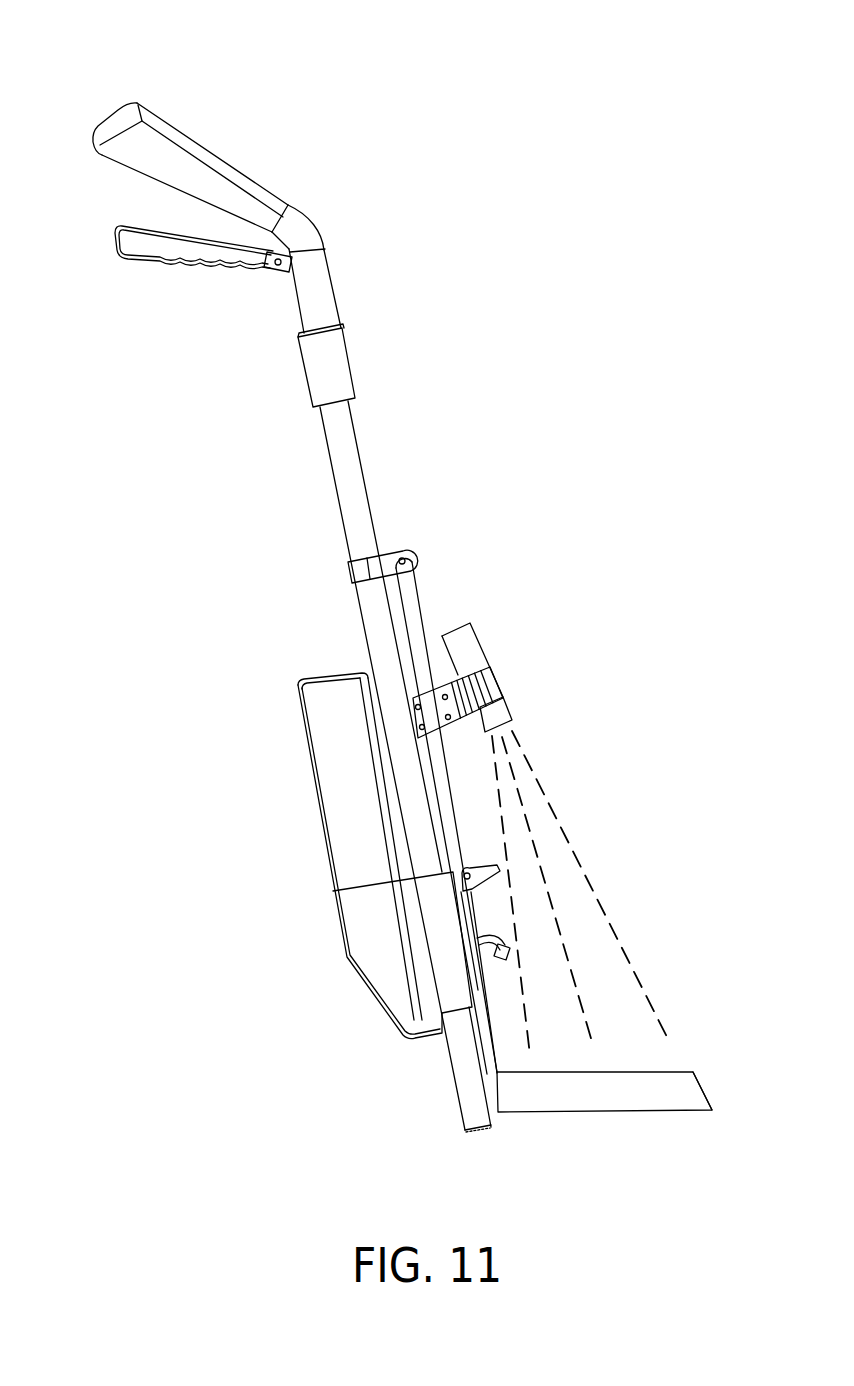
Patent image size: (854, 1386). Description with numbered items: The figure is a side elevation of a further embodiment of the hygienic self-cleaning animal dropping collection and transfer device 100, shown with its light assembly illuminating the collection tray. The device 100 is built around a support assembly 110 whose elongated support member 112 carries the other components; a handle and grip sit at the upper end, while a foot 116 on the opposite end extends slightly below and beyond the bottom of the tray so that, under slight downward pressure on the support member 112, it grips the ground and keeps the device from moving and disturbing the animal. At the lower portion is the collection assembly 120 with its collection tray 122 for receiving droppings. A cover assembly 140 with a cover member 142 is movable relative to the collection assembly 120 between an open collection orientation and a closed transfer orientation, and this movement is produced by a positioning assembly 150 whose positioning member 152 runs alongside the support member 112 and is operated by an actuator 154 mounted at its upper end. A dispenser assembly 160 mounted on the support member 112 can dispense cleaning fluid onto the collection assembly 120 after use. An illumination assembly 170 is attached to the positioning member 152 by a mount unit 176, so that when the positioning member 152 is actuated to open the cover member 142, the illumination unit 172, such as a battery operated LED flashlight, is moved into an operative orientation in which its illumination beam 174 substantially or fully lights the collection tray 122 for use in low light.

The hygienic self-cleaning animal dropping collection and transfer device 100 is at (622, 88).
The support assembly 110 is at (368, 290).
The support member 112 is at (360, 620).
The foot 116 is at (484, 1132).
The collection assembly 120 is at (640, 1127).
The collection tray 122 is at (686, 1098).
The cover assembly 140 is at (491, 856).
The cover member 142 is at (490, 994).
The positioning assembly 150 is at (494, 753).
The positioning member 152 is at (425, 618).
The actuator 154 is at (403, 553).
The dispenser assembly 160 is at (331, 933).
The illumination assembly 170 is at (562, 785).
The illumination unit 172 is at (514, 712).
The illumination beam 174 is at (618, 941).
The mount unit 176 is at (502, 677).